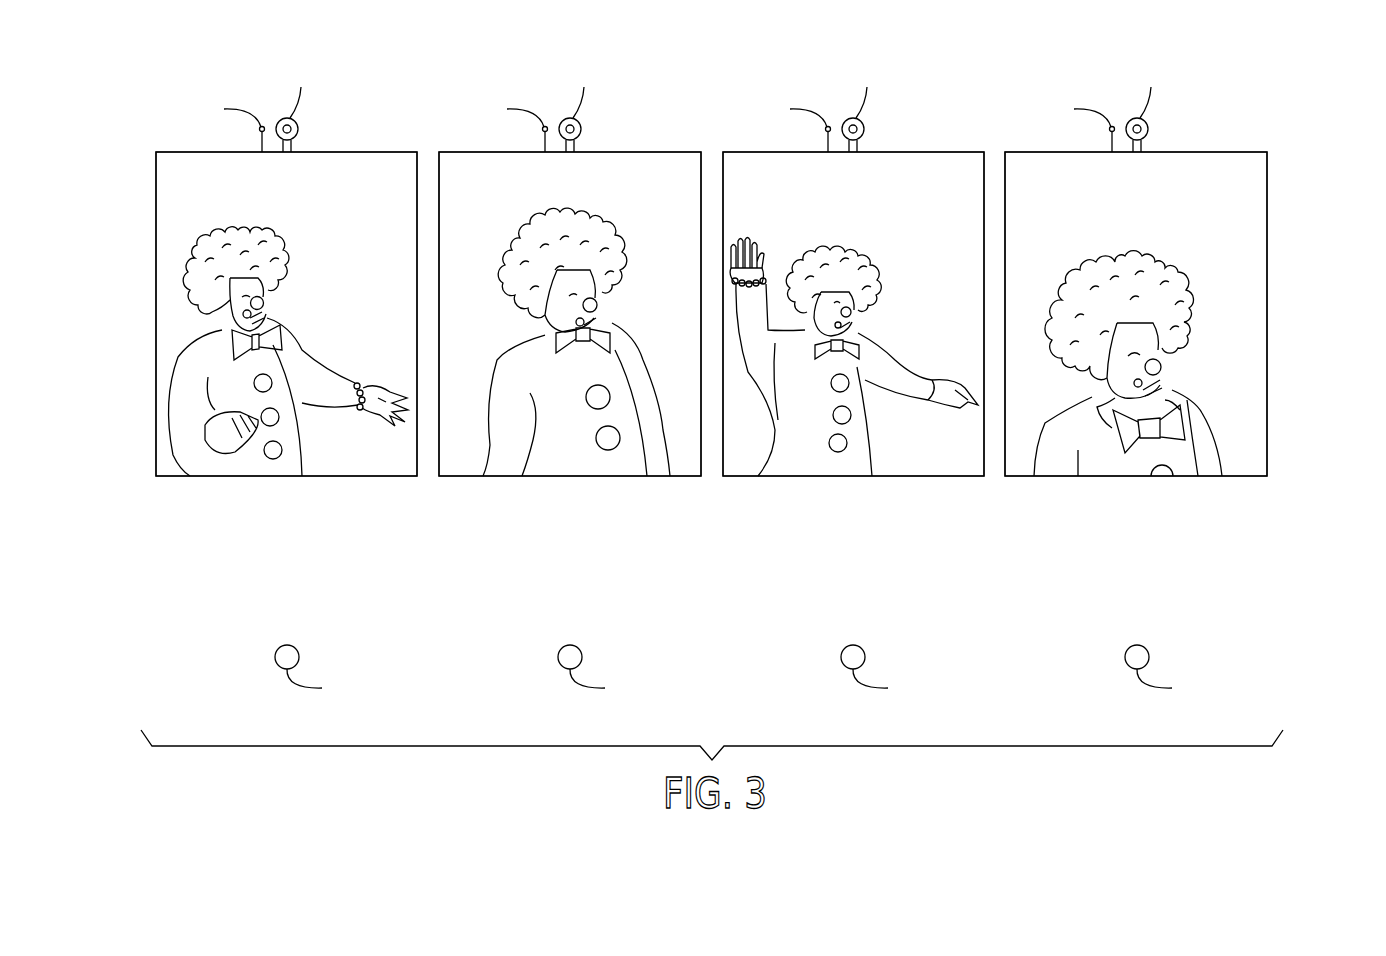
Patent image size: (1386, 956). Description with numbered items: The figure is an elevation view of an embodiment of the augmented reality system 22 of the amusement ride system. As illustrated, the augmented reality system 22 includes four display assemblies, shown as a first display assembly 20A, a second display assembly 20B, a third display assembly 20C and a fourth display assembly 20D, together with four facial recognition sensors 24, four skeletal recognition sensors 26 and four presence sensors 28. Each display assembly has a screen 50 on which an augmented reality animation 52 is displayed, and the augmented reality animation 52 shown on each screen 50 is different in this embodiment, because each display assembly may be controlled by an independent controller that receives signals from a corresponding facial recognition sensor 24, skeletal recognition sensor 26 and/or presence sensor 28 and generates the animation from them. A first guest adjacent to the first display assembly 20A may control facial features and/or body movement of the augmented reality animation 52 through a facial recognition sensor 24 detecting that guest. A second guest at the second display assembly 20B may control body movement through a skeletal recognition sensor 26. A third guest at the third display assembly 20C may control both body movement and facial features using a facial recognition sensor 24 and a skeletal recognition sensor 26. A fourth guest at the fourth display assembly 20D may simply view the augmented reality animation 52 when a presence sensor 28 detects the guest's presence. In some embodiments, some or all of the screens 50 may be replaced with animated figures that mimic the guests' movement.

The augmented reality system 22 is at (1295, 107).
The first display assembly 20A is at (178, 487).
The second display assembly 20B is at (461, 487).
The third display assembly 20C is at (744, 487).
The fourth display assembly 20D is at (1027, 487).
The facial recognition sensor 24 is at (656, 125).
The skeletal recognition sensor 26 is at (717, 108).
The presence sensor 28 is at (740, 673).
The screen 50 is at (337, 478).
The augmented reality animation 52 is at (188, 235).